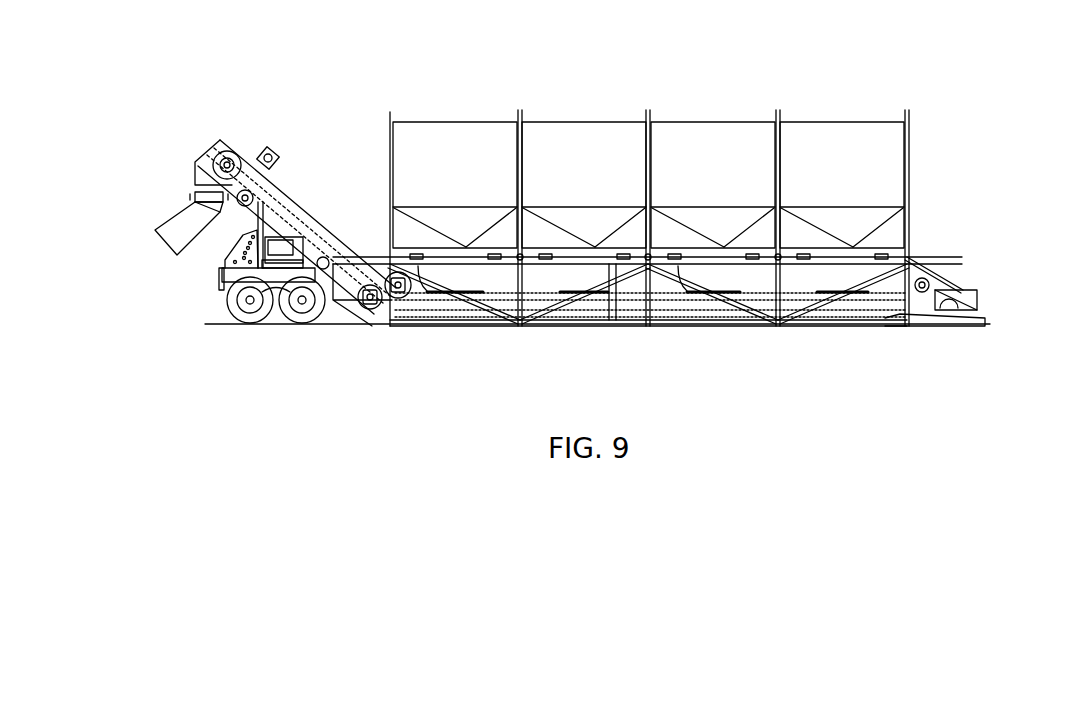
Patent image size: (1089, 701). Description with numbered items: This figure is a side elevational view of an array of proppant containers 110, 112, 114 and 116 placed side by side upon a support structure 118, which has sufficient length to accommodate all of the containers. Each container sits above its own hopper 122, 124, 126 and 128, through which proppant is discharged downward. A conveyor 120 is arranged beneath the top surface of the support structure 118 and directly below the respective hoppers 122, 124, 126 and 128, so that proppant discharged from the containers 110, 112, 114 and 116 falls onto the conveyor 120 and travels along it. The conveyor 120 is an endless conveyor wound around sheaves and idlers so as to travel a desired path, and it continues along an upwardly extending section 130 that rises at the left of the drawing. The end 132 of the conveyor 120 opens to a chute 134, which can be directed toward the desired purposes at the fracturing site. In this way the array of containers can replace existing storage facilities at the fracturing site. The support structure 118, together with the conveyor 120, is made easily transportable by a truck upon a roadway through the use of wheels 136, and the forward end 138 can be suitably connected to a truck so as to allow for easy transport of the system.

The container 110 is at (455, 142).
The container 112 is at (571, 138).
The container 114 is at (696, 142).
The container 116 is at (829, 142).
The support structure 118 is at (912, 262).
The conveyor 120 is at (884, 300).
The hopper 122 is at (498, 271).
The hopper 124 is at (560, 292).
The hopper 126 is at (758, 271).
The hopper 128 is at (818, 292).
The upwardly extending section 130 is at (290, 210).
The end 132 is at (228, 152).
The chute 134 is at (190, 222).
The wheels 136 is at (308, 318).
The forward end 138 is at (978, 298).